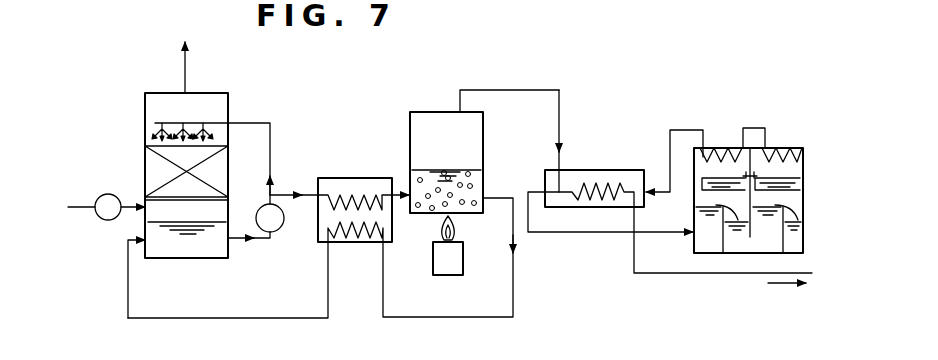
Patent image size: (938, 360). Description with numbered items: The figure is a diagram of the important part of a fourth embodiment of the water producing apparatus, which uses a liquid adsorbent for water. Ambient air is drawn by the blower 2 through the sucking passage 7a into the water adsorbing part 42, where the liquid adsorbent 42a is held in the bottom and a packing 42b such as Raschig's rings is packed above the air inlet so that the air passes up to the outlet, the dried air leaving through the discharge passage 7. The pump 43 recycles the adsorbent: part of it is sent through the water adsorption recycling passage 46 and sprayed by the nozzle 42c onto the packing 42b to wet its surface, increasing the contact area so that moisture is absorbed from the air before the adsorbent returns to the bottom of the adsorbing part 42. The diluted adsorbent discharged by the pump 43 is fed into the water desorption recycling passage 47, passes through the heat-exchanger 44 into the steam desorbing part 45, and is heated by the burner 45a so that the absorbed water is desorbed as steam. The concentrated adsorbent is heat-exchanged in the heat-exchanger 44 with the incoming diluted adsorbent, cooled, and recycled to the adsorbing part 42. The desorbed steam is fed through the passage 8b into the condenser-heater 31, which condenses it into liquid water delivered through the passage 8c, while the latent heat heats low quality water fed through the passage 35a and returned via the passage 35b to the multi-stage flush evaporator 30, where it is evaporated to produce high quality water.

The blower 2 is at (108, 194).
The discharge passage 7 is at (186, 68).
The sucking passage 7a is at (128, 212).
The passage for feeding steam 8b is at (559, 133).
The passage for discharging condensed water 8c is at (682, 274).
The multi-stage flush evaporator 30 is at (748, 128).
The condenser-heater 31 is at (616, 163).
The passage for feeding heated low quality water 35a is at (687, 129).
The passage for feeding water to flush evaporating part 35b is at (562, 233).
The water adsorbing part 42 is at (145, 128).
The liquid adsorbent 42a is at (180, 250).
The packing 42b is at (243, 173).
The nozzle 42c is at (195, 122).
The pump 43 is at (276, 232).
The heat-exchanger 44 is at (355, 178).
The steam desorbing part 45 is at (483, 141).
The burner 45a is at (455, 256).
The water adsorption recycling passage 46 is at (270, 136).
The water desorption recycling passage 47 is at (283, 190).